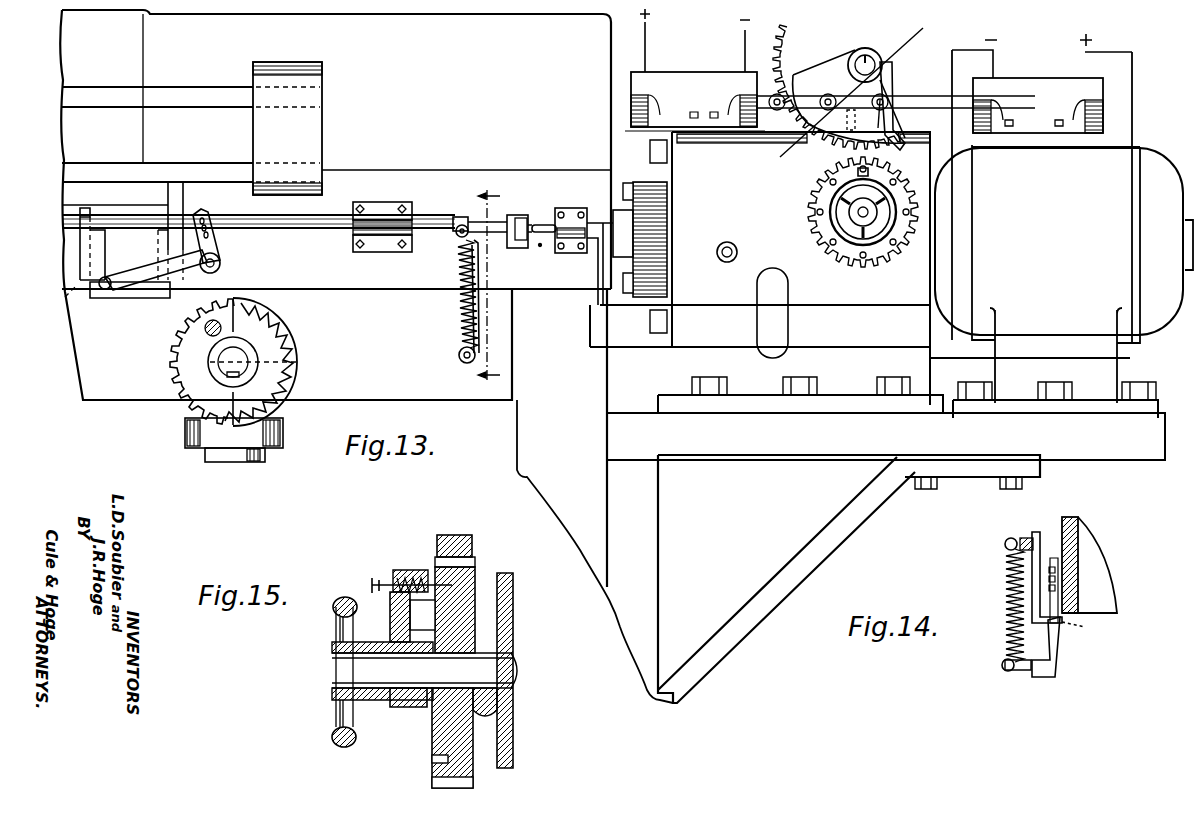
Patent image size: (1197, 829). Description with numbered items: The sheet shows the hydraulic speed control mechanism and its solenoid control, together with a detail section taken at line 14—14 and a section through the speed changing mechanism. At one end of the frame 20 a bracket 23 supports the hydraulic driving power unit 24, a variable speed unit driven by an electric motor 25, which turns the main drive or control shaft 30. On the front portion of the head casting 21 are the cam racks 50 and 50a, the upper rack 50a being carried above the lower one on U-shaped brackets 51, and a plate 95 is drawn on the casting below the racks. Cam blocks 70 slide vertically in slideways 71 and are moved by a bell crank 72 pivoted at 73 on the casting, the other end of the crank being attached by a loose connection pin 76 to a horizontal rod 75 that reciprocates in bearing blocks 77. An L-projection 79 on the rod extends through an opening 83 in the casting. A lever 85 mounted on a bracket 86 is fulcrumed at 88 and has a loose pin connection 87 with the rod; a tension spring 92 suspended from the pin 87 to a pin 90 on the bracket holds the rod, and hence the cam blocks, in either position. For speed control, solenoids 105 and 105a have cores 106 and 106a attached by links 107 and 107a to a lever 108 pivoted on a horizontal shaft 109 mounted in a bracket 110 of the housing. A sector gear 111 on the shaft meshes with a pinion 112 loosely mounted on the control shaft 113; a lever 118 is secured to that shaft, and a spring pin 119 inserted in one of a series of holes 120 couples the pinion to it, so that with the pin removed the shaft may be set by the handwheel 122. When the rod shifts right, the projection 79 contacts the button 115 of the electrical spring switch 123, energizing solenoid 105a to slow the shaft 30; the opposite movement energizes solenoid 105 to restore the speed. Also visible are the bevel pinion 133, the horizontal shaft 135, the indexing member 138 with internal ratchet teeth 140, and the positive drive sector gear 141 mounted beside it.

In FIG. 13, the frame 20 is at (527, 477).
In FIG. 13, the head casting 21 is at (124, 388).
In FIG. 14, the head casting 21 is at (1075, 530).
In FIG. 13, the bracket 23 is at (730, 451).
In FIG. 13, the hydraulic driving power unit 24 is at (840, 408).
In FIG. 15, the hydraulic driving power unit 24 is at (508, 592).
In FIG. 13, the electric motor 25 is at (1150, 160).
In FIG. 13, the shaft 30 is at (628, 228).
In FIG. 13, the cam rack 50 is at (186, 170).
In FIG. 13, the cam rack 50a is at (188, 97).
In FIG. 13, the U-shaped brackets 51 is at (316, 121).
In FIG. 13, the cam blocks 70 is at (118, 298).
In FIG. 13, the slideways 71 is at (70, 293).
In FIG. 13, the bell crank 72 is at (146, 282).
In FIG. 13, the pivot 73 is at (222, 264).
In FIG. 13, the horizontal rod 75 is at (287, 226).
In FIG. 13, the loose connection pin 76 is at (215, 230).
In FIG. 13, the bearing blocks 77 is at (372, 208).
In FIG. 13, the L-projection 79 is at (518, 215).
In FIG. 13, the opening 83 is at (541, 248).
In FIG. 13, the lever 85 is at (460, 217).
In FIG. 14, the lever 85 is at (1042, 545).
In FIG. 13, the bracket 86 is at (482, 264).
In FIG. 14, the bracket 86 is at (1058, 664).
In FIG. 13, the loose pin connection 87 is at (456, 234).
In FIG. 14, the loose pin connection 87 is at (1004, 543).
In FIG. 14, the fulcrum 88 is at (1084, 630).
In FIG. 13, the pin 90 is at (459, 357).
In FIG. 14, the pin 90 is at (1025, 673).
In FIG. 13, the spring 92 is at (458, 316).
In FIG. 14, the spring 92 is at (1005, 643).
In FIG. 13, the plate 95 is at (132, 190).
In FIG. 13, the solenoid 105 is at (664, 78).
In FIG. 13, the solenoid 105a is at (1026, 85).
In FIG. 13, the core 106 is at (768, 92).
In FIG. 13, the core 106a is at (920, 110).
In FIG. 13, the link 107 is at (812, 78).
In FIG. 13, the link 107a is at (878, 92).
In FIG. 13, the lever 108 is at (823, 90).
In FIG. 13, the horizontal shaft 109 is at (863, 86).
In FIG. 13, the bracket 110 is at (850, 112).
In FIG. 13, the sector gear 111 is at (812, 112).
In FIG. 15, the sector gear 111 is at (452, 543).
In FIG. 13, the pinion 112 is at (818, 198).
In FIG. 15, the pinion 112 is at (438, 740).
In FIG. 13, the control shaft 113 is at (852, 216).
In FIG. 15, the control shaft 113 is at (338, 673).
In FIG. 13, the button 115 is at (542, 225).
In FIG. 13, the lever 118 is at (840, 205).
In FIG. 15, the lever 118 is at (405, 708).
In FIG. 13, the spring pin 119 is at (858, 172).
In FIG. 15, the spring pin 119 is at (384, 580).
In FIG. 13, the holes 120 is at (828, 245).
In FIG. 15, the holes 120 is at (432, 760).
In FIG. 13, the handwheel 122 is at (853, 244).
In FIG. 15, the handwheel 122 is at (334, 740).
In FIG. 13, the electrical spring switch 123 is at (574, 208).
In FIG. 13, the bevel pinion 133 is at (286, 421).
In FIG. 13, the horizontal shaft 135 is at (252, 352).
In FIG. 13, the driving or indexing member 138 is at (282, 330).
In FIG. 13, the ratchet teeth 140 is at (298, 366).
In FIG. 13, the positive drive sector gear 141 is at (172, 358).
In FIG. 13, the section line 14 is at (500, 400).